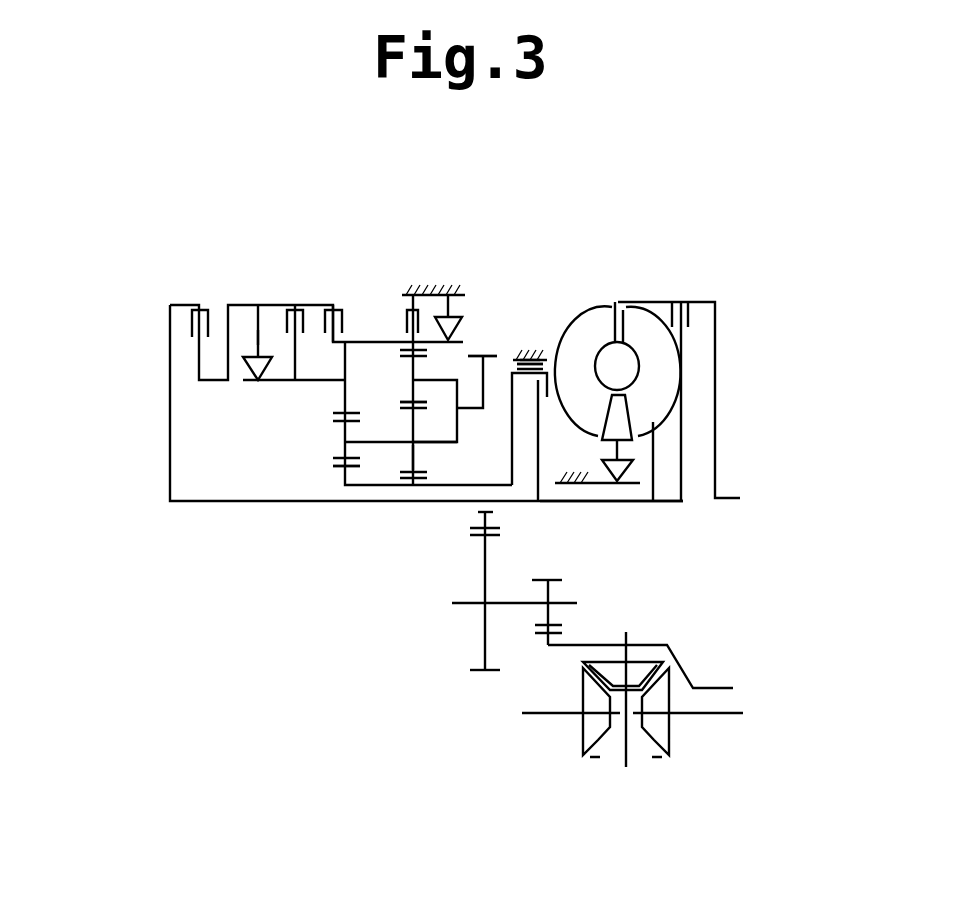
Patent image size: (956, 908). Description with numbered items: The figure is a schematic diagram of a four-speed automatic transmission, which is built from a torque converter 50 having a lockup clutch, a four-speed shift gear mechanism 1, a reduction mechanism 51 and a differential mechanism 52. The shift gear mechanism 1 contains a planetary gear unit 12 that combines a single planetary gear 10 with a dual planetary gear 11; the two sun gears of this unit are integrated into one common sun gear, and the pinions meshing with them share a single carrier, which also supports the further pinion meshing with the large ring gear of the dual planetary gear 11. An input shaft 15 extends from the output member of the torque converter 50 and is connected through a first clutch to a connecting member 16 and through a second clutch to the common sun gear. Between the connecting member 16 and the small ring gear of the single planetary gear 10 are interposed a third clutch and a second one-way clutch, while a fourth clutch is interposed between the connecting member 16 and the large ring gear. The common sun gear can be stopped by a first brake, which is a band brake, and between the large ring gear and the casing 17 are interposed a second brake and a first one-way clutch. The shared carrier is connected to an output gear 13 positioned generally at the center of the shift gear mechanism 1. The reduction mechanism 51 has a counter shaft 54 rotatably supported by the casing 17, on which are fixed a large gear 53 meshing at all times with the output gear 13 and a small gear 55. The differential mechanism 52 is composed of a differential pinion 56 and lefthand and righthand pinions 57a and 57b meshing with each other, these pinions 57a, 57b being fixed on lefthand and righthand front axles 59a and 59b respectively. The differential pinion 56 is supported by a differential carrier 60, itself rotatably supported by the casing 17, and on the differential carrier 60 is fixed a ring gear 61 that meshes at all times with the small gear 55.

The four-speed shift gear mechanism 1 is at (160, 288).
The single planetary gear 10 is at (345, 364).
The dual planetary gear 11 is at (392, 330).
The planetary gear unit 12 is at (387, 160).
The output gear 13 is at (506, 358).
The input shaft 15 is at (588, 502).
The connecting member 16 is at (262, 303).
The casing 17 is at (438, 344).
The torque converter 50 is at (621, 292).
The reduction mechanism 51 is at (463, 632).
The differential mechanism 52 is at (566, 755).
The large gear 53 is at (493, 646).
The counter shaft 54 is at (509, 600).
The small gear 55 is at (553, 591).
The differential pinion 56 is at (642, 670).
The lefthand pinion 57a is at (598, 757).
The righthand pinion 57b is at (660, 757).
The lefthand front axle 59a is at (523, 715).
The righthand front axle 59b is at (721, 715).
The differential carrier 60 is at (691, 672).
The ring gear 61 is at (553, 641).